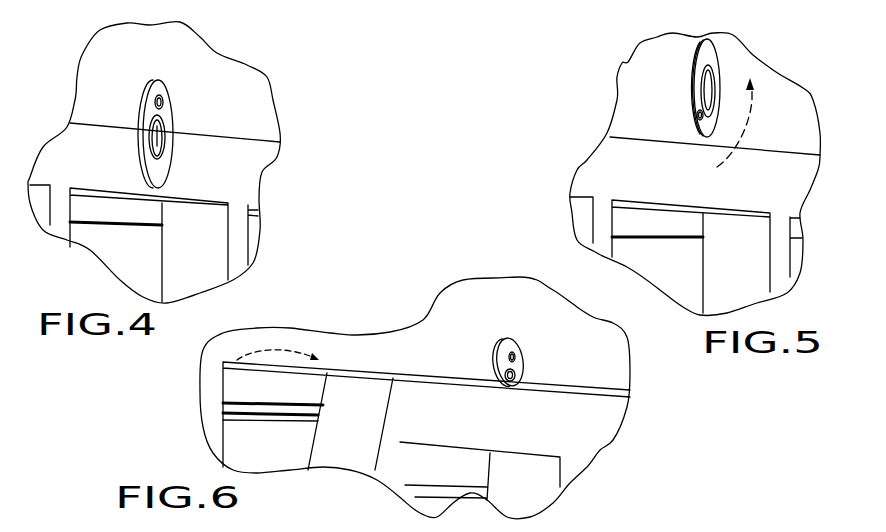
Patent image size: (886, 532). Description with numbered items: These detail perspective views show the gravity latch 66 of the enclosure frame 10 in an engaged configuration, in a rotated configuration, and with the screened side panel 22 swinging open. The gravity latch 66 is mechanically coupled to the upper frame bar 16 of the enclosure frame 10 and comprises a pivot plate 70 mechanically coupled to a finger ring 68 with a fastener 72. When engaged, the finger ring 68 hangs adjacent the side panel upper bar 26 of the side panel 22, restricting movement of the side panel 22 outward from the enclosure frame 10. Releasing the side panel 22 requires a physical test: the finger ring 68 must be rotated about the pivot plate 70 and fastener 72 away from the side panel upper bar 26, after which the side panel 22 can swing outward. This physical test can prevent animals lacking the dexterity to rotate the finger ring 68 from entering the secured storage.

In FIG. 4, the enclosure frame 10 is at (84, 57).
In FIG. 5, the enclosure frame 10 is at (628, 62).
In FIG. 6, the enclosure frame 10 is at (430, 313).
In FIG. 4, the upper frame bar 16 is at (230, 92).
In FIG. 5, the upper frame bar 16 is at (777, 100).
In FIG. 6, the upper frame bar 16 is at (460, 302).
In FIG. 4, the side panel 22 is at (262, 170).
In FIG. 5, the side panel 22 is at (778, 283).
In FIG. 6, the side panel 22 is at (597, 447).
In FIG. 4, the side panel upper bar 26 is at (227, 155).
In FIG. 5, the side panel upper bar 26 is at (650, 167).
In FIG. 6, the side panel upper bar 26 is at (572, 422).
In FIG. 4, the gravity latch 66 is at (172, 97).
In FIG. 5, the gravity latch 66 is at (720, 57).
In FIG. 6, the gravity latch 66 is at (530, 362).
In FIG. 4, the finger ring 68 is at (163, 163).
In FIG. 5, the finger ring 68 is at (697, 40).
In FIG. 6, the finger ring 68 is at (502, 387).
In FIG. 4, the pivot plate 70 is at (150, 88).
In FIG. 5, the pivot plate 70 is at (688, 120).
In FIG. 6, the pivot plate 70 is at (498, 342).
In FIG. 4, the fastener 72 is at (160, 94).
In FIG. 5, the fastener 72 is at (712, 135).
In FIG. 6, the fastener 72 is at (517, 356).